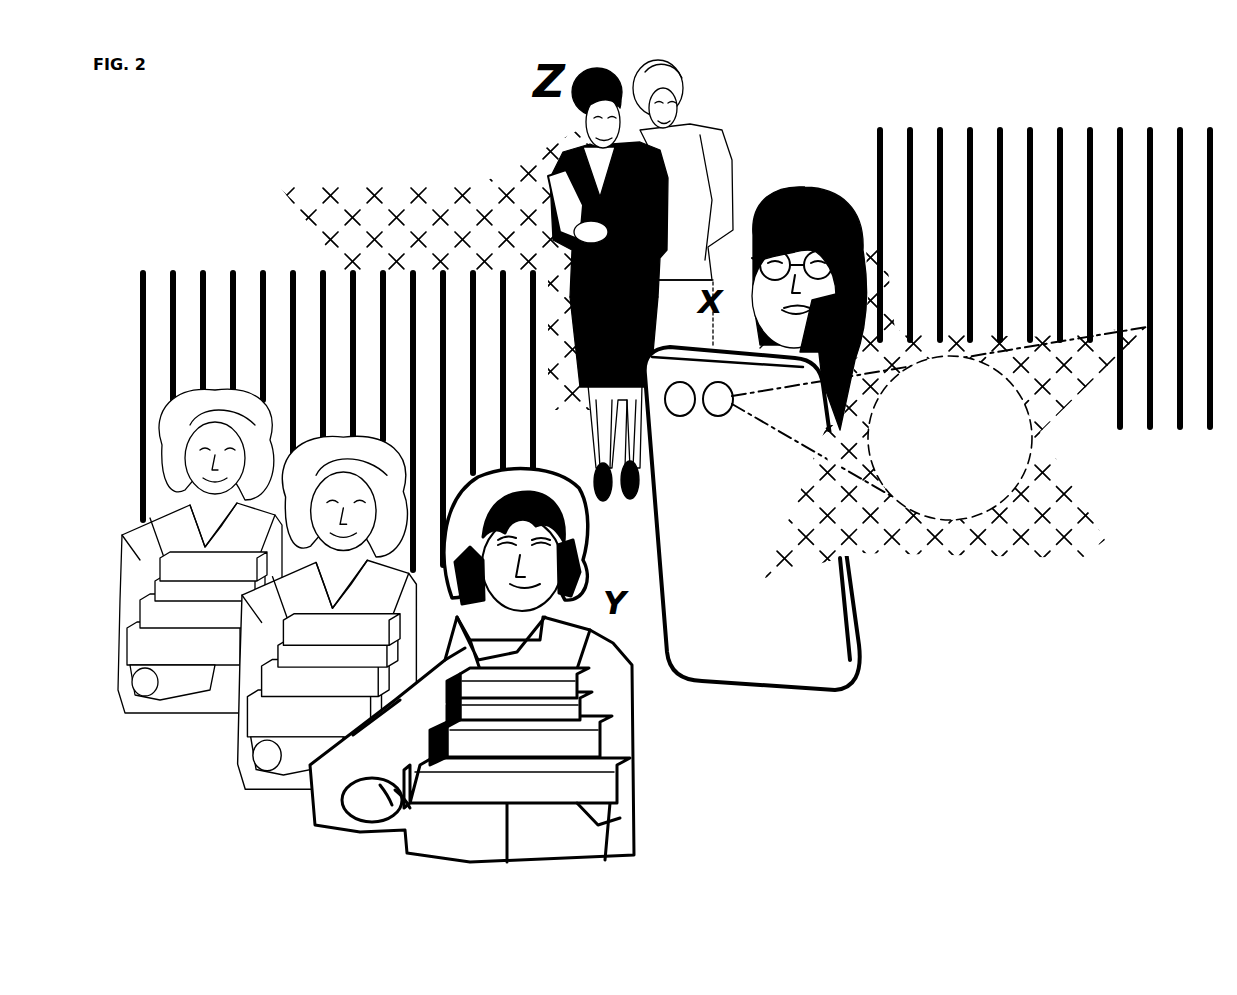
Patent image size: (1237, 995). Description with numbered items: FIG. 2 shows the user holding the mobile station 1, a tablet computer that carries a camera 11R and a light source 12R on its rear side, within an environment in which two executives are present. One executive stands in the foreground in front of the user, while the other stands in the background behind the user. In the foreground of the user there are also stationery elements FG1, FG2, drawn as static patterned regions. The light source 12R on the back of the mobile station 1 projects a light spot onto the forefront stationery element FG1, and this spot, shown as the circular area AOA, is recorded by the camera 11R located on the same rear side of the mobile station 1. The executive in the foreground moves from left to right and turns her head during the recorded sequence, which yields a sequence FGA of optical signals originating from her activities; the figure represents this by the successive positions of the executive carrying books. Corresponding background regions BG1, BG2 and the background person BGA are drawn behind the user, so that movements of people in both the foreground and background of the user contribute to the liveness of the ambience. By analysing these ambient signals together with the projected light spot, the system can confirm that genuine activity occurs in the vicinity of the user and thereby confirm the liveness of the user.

The mobile station 1 is at (896, 542).
The camera 11R is at (681, 400).
The light source 12R is at (722, 405).
The optical ambient signal sequence AOA is at (958, 458).
The stationery element FG1 is at (917, 540).
The stationery element FG2 is at (237, 272).
The sequence of optical signals FGA is at (627, 737).
The first background region BG1 is at (1180, 430).
The second background region BG2 is at (437, 183).
The background subject BGA is at (672, 157).